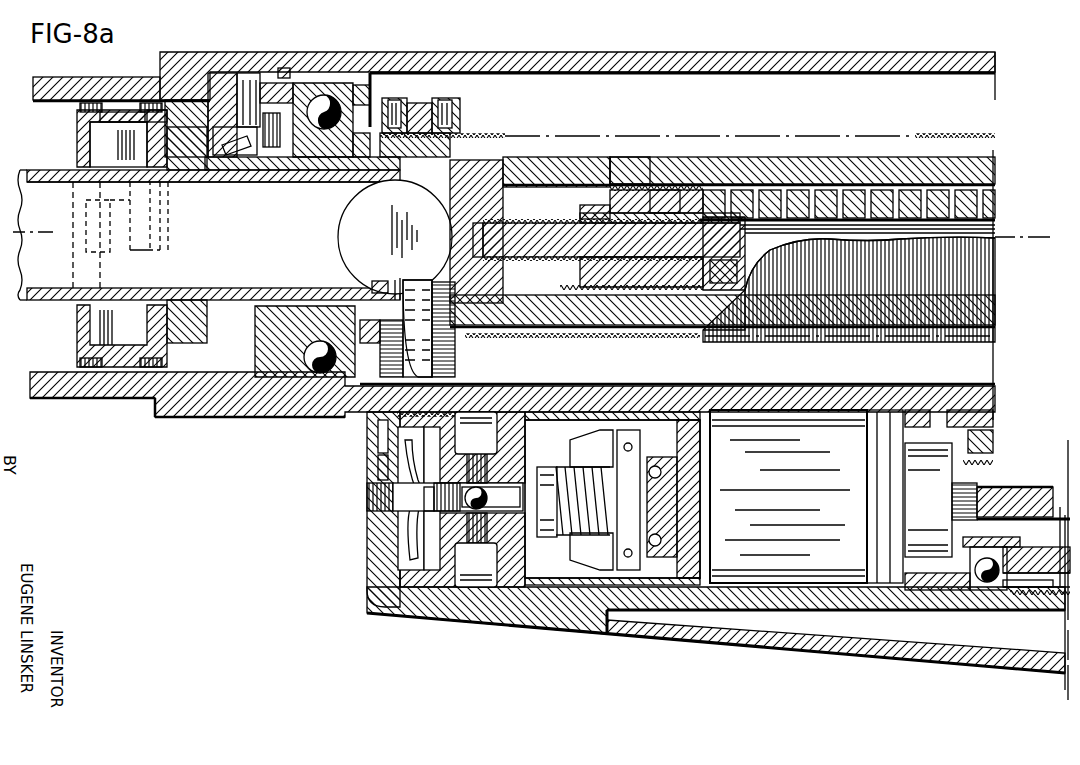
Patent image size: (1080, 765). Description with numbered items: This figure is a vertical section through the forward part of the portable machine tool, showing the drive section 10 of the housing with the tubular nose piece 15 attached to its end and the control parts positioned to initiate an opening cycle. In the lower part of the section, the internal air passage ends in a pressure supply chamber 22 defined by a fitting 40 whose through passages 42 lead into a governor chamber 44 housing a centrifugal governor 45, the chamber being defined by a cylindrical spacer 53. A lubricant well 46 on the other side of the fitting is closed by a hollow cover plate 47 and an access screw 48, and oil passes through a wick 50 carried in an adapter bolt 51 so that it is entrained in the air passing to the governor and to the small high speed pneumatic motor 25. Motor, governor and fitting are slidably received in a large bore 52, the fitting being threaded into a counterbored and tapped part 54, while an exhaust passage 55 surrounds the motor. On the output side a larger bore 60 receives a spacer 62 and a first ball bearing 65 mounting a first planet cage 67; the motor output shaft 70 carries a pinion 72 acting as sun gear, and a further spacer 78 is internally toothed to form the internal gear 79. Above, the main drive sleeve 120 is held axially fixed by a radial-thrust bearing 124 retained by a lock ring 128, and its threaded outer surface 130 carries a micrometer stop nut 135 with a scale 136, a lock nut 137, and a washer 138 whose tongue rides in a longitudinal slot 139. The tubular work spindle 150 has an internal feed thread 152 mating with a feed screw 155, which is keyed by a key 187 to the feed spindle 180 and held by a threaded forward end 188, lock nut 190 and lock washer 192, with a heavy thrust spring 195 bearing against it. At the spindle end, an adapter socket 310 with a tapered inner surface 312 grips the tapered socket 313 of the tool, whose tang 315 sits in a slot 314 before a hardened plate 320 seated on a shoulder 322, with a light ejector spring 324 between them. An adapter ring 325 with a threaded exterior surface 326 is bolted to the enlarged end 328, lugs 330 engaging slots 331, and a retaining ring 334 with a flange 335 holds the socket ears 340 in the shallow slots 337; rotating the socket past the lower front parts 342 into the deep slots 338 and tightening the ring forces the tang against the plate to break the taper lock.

The drive section 10 is at (492, 42).
The nose piece 15 is at (66, 84).
The retaining ring 334 is at (115, 117).
The threaded exterior surface 326 is at (150, 115).
The deep slots 338 is at (82, 108).
The flange 335 is at (118, 143).
The adapter socket 310 is at (55, 168).
The shallow slots 337 is at (70, 212).
The ears 340 is at (84, 222).
The slots 331 is at (138, 225).
The lugs 330 is at (170, 220).
The tapered socket 313 is at (268, 248).
The tang 315 is at (342, 230).
The tapered inner surface 312 is at (45, 286).
The enlarged end 328 is at (198, 296).
The lower front parts 342 is at (110, 320).
The adapter ring 325 is at (137, 400).
The radial-thrust bearing 124 is at (340, 88).
The lock ring 128 is at (272, 128).
The lock nut 137 is at (392, 104).
The washer 138 is at (415, 103).
The micrometer stop nut 135 is at (460, 112).
The plate 320 is at (490, 170).
The shoulder 322 is at (520, 170).
The slot 314 is at (350, 240).
The ejector spring 324 is at (415, 268).
The lock nut 190 is at (580, 206).
The threaded forward end 188 is at (528, 262).
The lock washer 192 is at (600, 280).
The feed screw 155 is at (632, 183).
The key 187 is at (665, 200).
The feed thread 152 is at (718, 188).
The work spindle 150 is at (768, 165).
The thrust spring 195 is at (858, 195).
The feed spindle 180 is at (880, 195).
The longitudinal slot 139 is at (930, 134).
The scale 136 is at (437, 370).
The fitting 40 is at (512, 415).
The governor chamber 44 is at (568, 415).
The main drive sleeve 120 is at (710, 328).
The threaded outer surface 130 is at (810, 343).
The cover plate 47 is at (380, 464).
The access screw 48 is at (370, 490).
The lubricant well 46 is at (405, 505).
The wick 50 is at (405, 540).
The adapter bolt 51 is at (418, 490).
The through passages 42 is at (530, 450).
The centrifugal governor 45 is at (600, 575).
The bore 52 is at (555, 590).
The cylindrical spacer 53 is at (640, 585).
The counterbored and tapped part 54 is at (418, 590).
The pressure supply chamber 22 is at (478, 592).
The pneumatic motor 25 is at (782, 565).
The exhaust passage 55 is at (748, 620).
The bore 60 is at (905, 612).
The spacer 62 is at (950, 612).
The first ball bearing 65 is at (985, 612).
The internal gear 79 is at (1013, 612).
The spacer 78 is at (1040, 612).
The output shaft 70 is at (975, 480).
The pinion 72 is at (1035, 485).
The first planet cage 67 is at (1035, 560).